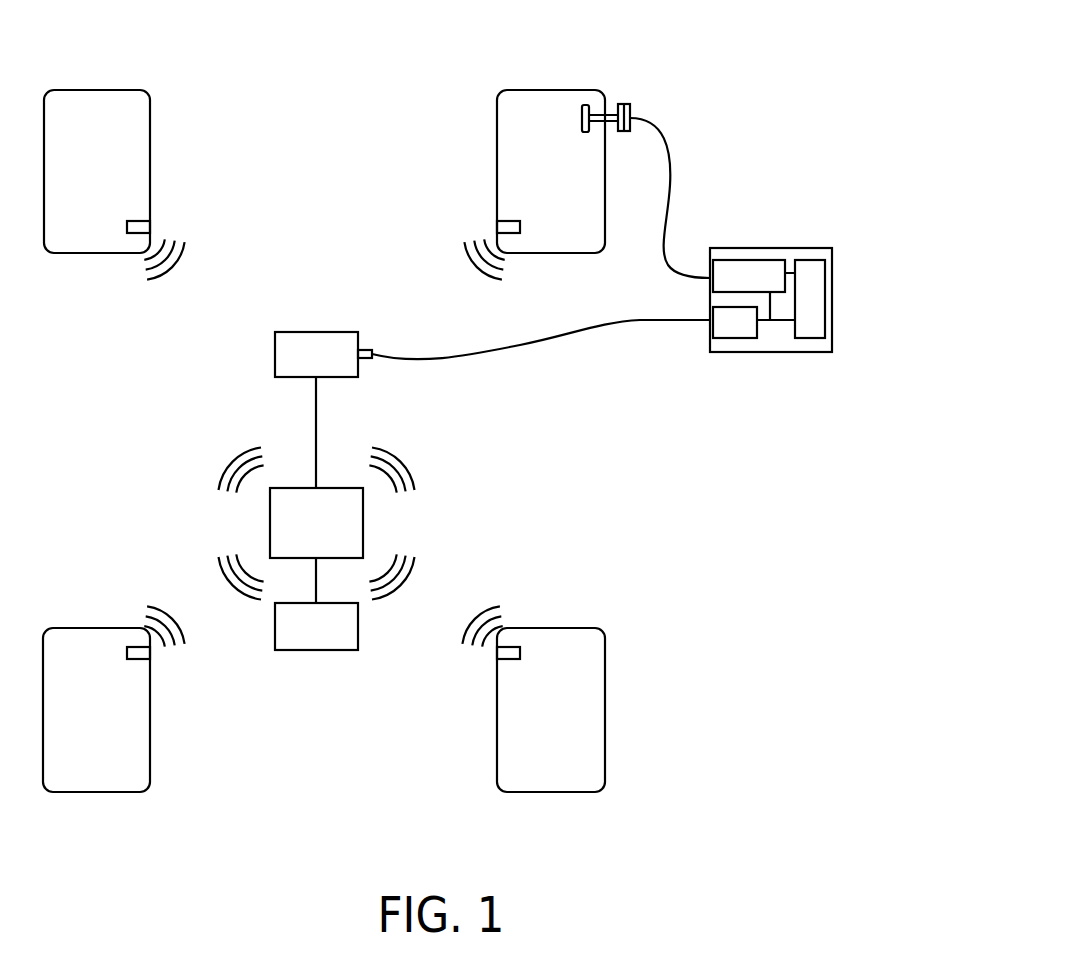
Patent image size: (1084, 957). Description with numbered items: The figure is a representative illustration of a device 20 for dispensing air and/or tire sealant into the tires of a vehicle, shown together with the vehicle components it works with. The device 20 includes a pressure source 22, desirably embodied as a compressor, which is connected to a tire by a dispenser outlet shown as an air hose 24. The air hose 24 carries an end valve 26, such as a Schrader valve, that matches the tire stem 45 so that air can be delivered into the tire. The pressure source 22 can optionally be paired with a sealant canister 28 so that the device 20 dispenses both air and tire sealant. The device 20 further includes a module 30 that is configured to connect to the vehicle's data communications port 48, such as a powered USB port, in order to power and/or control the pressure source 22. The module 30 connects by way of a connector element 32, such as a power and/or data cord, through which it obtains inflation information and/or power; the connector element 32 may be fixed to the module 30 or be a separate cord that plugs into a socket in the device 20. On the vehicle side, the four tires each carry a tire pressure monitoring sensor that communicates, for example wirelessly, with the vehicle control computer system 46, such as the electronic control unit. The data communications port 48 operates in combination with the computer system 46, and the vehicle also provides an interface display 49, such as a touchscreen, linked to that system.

The device 20 is at (836, 303).
The pressure source 22 is at (750, 261).
The air hose 24 is at (672, 175).
The end valve 26 is at (636, 106).
The sealant canister 28 is at (820, 261).
The module 30 is at (730, 339).
The connector element 32 is at (520, 348).
The tire stem 45 is at (585, 105).
The vehicle control computer system 46 is at (363, 520).
The data communications port 48 is at (316, 332).
The interface display 49 is at (313, 655).